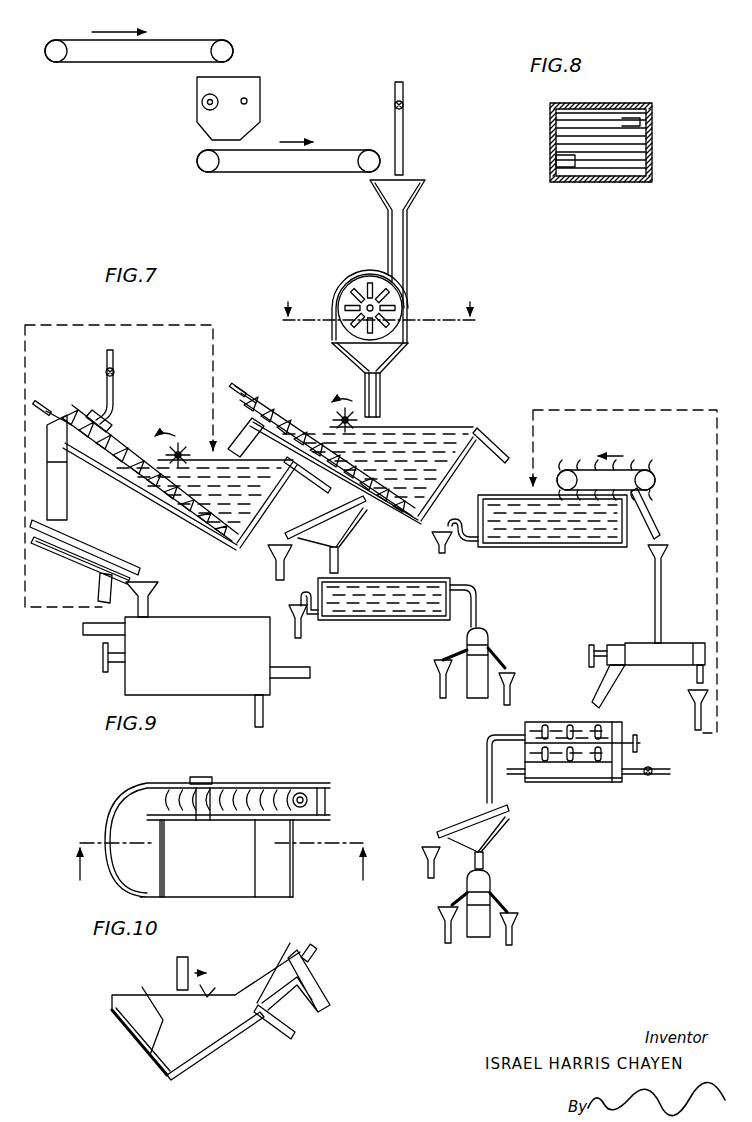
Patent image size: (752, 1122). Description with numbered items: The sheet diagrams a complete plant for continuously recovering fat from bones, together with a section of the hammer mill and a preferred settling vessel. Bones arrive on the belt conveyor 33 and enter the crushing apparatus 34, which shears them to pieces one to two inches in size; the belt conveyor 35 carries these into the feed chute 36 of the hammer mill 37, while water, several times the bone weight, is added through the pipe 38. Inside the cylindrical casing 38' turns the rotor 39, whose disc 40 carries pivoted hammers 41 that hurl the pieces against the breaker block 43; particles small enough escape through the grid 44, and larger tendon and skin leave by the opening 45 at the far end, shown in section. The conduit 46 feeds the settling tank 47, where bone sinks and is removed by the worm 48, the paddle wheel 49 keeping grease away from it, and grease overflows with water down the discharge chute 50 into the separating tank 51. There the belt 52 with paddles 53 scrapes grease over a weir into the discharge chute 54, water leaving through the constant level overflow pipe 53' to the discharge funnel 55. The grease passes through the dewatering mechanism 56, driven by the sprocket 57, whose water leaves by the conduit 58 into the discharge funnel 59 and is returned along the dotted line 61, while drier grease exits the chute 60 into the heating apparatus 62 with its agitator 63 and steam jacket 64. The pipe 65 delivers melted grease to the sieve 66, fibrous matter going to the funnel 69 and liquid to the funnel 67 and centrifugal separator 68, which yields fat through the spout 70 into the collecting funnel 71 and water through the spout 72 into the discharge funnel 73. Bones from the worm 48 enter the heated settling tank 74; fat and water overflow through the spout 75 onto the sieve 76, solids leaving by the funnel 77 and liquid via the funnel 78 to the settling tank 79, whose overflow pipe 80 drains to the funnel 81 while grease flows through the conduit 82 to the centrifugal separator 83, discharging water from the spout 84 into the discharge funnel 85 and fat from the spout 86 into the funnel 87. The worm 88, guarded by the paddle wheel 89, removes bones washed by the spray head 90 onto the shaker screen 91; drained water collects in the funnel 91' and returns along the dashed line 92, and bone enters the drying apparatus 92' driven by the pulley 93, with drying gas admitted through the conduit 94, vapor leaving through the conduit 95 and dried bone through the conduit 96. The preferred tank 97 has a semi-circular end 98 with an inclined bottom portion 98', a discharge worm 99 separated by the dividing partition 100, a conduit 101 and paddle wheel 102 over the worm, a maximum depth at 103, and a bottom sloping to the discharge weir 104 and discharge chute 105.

In FIG. 7, the belt conveyor 33 is at (139, 43).
In FIG. 7, the crushing apparatus 34 is at (261, 100).
In FIG. 7, the belt conveyor 35 is at (288, 151).
In FIG. 7, the feed chute 36 is at (408, 240).
In FIG. 8, the feed chute 36 is at (626, 110).
In FIG. 7, the hammer mill 37 is at (356, 286).
In FIG. 7, the pipe or conduit 38 is at (412, 128).
In FIG. 7, the cylindrical casing 38' is at (353, 303).
In FIG. 7, the rotor 39 is at (405, 297).
In FIG. 7, the disc 40 is at (338, 298).
In FIG. 7, the hammers 41 is at (380, 335).
In FIG. 7, the breaker block 43 is at (409, 318).
In FIG. 7, the grid 44 is at (335, 340).
In FIG. 8, the opening 45 is at (560, 160).
In FIG. 7, the conduit 46 is at (381, 400).
In FIG. 7, the settling tank 47 is at (437, 469).
In FIG. 7, the worm 48 is at (287, 408).
In FIG. 7, the paddle wheel 49 is at (330, 415).
In FIG. 7, the discharge chute 50 is at (483, 440).
In FIG. 7, the separating tank 51 is at (577, 548).
In FIG. 7, the belt 52 is at (572, 470).
In FIG. 7, the paddles 53 is at (625, 454).
In FIG. 7, the constant level overflow pipe 53' is at (486, 550).
In FIG. 7, the discharge chute 54 is at (652, 513).
In FIG. 7, the discharge funnel 55 is at (434, 545).
In FIG. 7, the dewatering mechanism 56 is at (692, 643).
In FIG. 7, the sprocket 57 is at (589, 654).
In FIG. 7, the conduit 58 is at (697, 679).
In FIG. 7, the discharge funnel 59 is at (690, 710).
In FIG. 7, the chute 60 is at (604, 691).
In FIG. 7, the dotted line 61 is at (597, 412).
In FIG. 7, the heating apparatus 62 is at (640, 738).
In FIG. 7, the agitator 63 is at (570, 733).
In FIG. 7, the steam jacket 64 is at (585, 778).
In FIG. 7, the pipe 65 is at (486, 771).
In FIG. 7, the sieve 66 is at (462, 829).
In FIG. 7, the funnel 67 is at (484, 860).
In FIG. 7, the centrifugal separator 68 is at (478, 938).
In FIG. 7, the funnel 69 is at (419, 862).
In FIG. 7, the spout 70 is at (447, 898).
In FIG. 7, the collecting funnel 71 is at (445, 935).
In FIG. 7, the spout 72 is at (503, 900).
In FIG. 7, the discharge funnel 73 is at (514, 938).
In FIG. 7, the second heated settling tank 74 is at (263, 496).
In FIG. 7, the spout 75 is at (298, 470).
In FIG. 7, the sieve 76 is at (339, 508).
In FIG. 7, the funnel 77 is at (275, 572).
In FIG. 7, the funnel 78 is at (343, 540).
In FIG. 7, the settling tank 79 is at (389, 621).
In FIG. 7, the constant level overflow pipe 80 is at (318, 620).
In FIG. 7, the funnel 81 is at (294, 634).
In FIG. 7, the conduit 82 is at (478, 597).
In FIG. 7, the centrifugal separator 83 is at (474, 698).
In FIG. 7, the spout 84 is at (502, 655).
In FIG. 7, the discharge funnel 85 is at (516, 689).
In FIG. 7, the spout 86 is at (449, 648).
In FIG. 7, the funnel 87 is at (430, 680).
In FIG. 7, the worm 88 is at (74, 416).
In FIG. 7, the paddle wheel 89 is at (172, 450).
In FIG. 7, the spray head 90 is at (113, 423).
In FIG. 7, the shaker screen 91 is at (85, 561).
In FIG. 7, the funnel 91' is at (82, 575).
In FIG. 7, the dashed line 92 is at (119, 455).
In FIG. 9, the drying apparatus 92' is at (197, 638).
In FIG. 9, the pulley 93 is at (103, 663).
In FIG. 9, the conduit 94 is at (95, 633).
In FIG. 9, the conduit 95 is at (295, 680).
In FIG. 9, the conduit 96 is at (264, 720).
In FIG. 10, the tank 97 is at (226, 1043).
In FIG. 10, the semi-circular end 98 is at (153, 947).
In FIG. 10, the inclined bottom portion 98' is at (122, 973).
In FIG. 10, the discharge worm 99 is at (270, 797).
In FIG. 10, the dividing partition 100 is at (204, 820).
In FIG. 10, the conduit 101 is at (163, 786).
In FIG. 10, the paddle wheel 102 is at (209, 995).
In FIG. 10, the maximum depth 103 is at (172, 1072).
In FIG. 10, the discharge weir 104 is at (256, 882).
In FIG. 10, the discharge chute 105 is at (278, 1036).